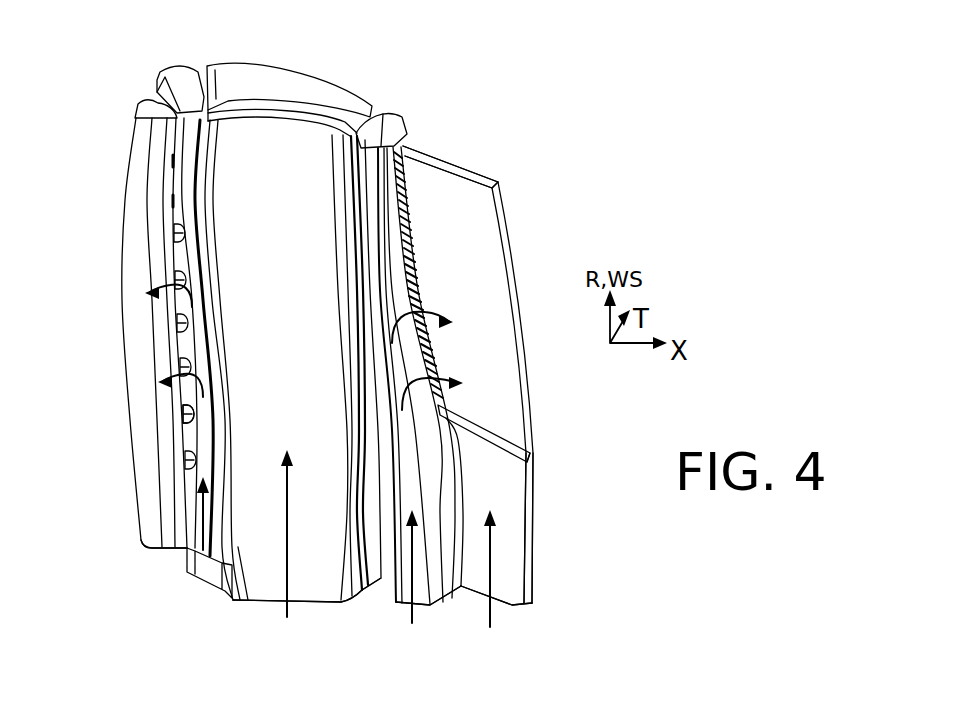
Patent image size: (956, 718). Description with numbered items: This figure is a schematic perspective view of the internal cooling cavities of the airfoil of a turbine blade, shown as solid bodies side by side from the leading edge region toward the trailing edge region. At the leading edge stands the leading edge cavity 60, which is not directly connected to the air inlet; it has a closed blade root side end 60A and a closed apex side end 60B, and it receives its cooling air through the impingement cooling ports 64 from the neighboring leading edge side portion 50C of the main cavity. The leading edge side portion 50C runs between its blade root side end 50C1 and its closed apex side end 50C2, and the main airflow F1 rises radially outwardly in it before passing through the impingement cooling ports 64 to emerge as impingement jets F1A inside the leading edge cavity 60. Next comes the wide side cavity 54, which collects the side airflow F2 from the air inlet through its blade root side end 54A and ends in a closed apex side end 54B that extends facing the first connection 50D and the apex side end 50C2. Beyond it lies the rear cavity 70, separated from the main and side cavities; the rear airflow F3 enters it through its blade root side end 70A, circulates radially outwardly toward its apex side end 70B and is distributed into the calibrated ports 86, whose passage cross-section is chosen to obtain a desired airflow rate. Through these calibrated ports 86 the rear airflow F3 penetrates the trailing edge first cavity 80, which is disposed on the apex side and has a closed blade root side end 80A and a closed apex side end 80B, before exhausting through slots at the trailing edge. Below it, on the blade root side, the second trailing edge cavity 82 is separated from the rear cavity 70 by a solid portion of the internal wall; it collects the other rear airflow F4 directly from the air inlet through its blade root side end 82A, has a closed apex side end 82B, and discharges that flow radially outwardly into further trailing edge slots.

The leading edge cavity 60 is at (133, 260).
The apex side end of the leading edge cavity 60B is at (150, 110).
The blade root side end of the leading edge cavity 60A is at (170, 550).
The apex side end of the leading edge side portion 50C2 is at (180, 80).
The blade root side end of the leading edge side portion 50C1 is at (197, 580).
The leading edge side portion 50C is at (183, 437).
The impingement cooling ports 64 is at (183, 410).
The impingement jets F1A is at (178, 372).
The main airflow F1 is at (201, 507).
The side cavity 54 is at (312, 537).
The blade root side end of the side cavity 54A is at (327, 603).
The apex side end of the side cavity 54B is at (310, 117).
The first connection 50D is at (280, 83).
The side airflow F2 is at (287, 562).
The rear cavity 70 is at (415, 487).
The apex side end of the rear cavity 70B is at (387, 128).
The blade root side end of the rear cavity 70A is at (452, 590).
The calibrated ports 86 is at (415, 223).
The rear airflow F3 is at (447, 380).
The trailing edge first cavity 80 is at (460, 242).
The apex side end of the trailing edge first cavity 80B is at (477, 167).
The blade root side end of the trailing edge first cavity 80A is at (505, 443).
The apex side end of the second trailing edge cavity 82B is at (483, 427).
The second trailing edge cavity 82 is at (490, 490).
The blade root side end of the second trailing edge cavity 82A is at (500, 604).
The other rear airflow F4 is at (493, 547).